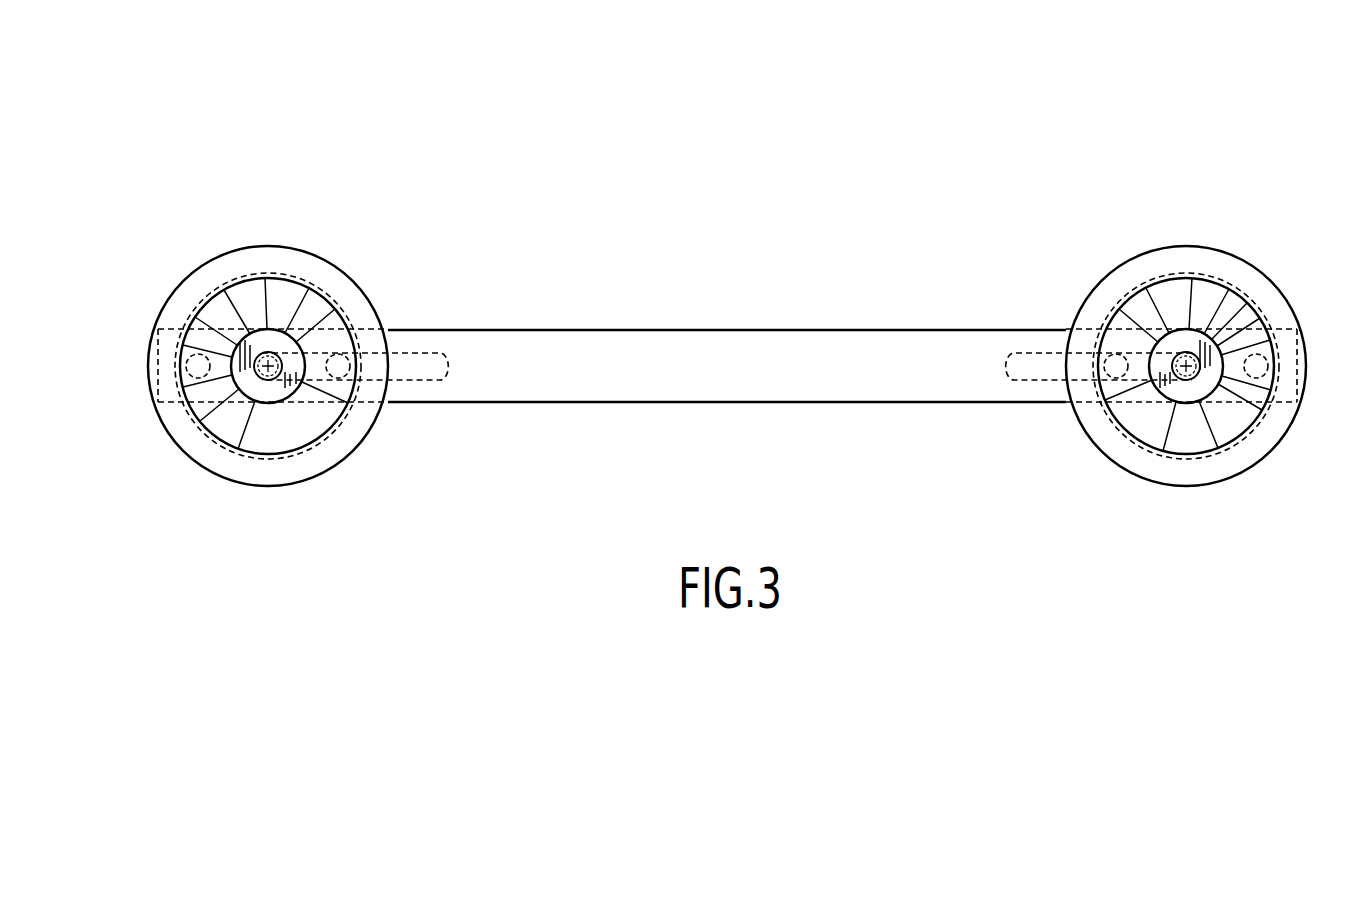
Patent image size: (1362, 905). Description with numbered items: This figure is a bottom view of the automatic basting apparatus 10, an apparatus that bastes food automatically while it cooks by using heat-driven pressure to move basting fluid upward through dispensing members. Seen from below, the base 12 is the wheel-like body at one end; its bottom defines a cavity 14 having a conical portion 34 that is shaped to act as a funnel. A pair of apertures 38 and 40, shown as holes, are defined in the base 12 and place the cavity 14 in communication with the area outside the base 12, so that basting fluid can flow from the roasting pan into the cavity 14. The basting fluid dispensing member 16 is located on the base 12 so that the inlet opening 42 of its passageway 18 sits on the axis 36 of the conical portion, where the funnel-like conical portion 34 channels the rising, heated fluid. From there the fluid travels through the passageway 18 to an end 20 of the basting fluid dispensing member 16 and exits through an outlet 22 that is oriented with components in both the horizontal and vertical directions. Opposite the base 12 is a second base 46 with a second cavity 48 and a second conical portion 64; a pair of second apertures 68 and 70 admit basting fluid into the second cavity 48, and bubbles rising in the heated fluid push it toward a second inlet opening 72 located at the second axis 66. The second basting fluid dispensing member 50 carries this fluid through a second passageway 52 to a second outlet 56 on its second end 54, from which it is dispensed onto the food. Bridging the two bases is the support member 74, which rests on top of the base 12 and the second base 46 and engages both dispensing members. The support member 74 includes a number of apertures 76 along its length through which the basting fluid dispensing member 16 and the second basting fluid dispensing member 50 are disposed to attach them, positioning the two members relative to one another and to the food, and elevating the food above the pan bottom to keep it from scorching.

The automatic basting apparatus 10 is at (615, 88).
The base 12 is at (199, 268).
The cavity 14 is at (237, 410).
The basting fluid dispensing member 16 is at (407, 330).
The passageway 18 is at (272, 362).
The end 20 is at (447, 355).
The outlet 22 is at (449, 375).
The conical portion 34 is at (287, 307).
The axis 36 is at (262, 372).
The aperture 38 is at (270, 460).
The aperture 40 is at (270, 273).
The inlet opening 42 is at (272, 400).
The second base 46 is at (1257, 267).
The second cavity 48 is at (1218, 411).
The second basting fluid dispensing member 50 is at (1045, 353).
The second passageway 52 is at (1182, 362).
The second end 54 is at (1010, 380).
The second outlet 56 is at (1006, 378).
The second conical portion 64 is at (1170, 308).
The second axis 66 is at (1223, 390).
The second aperture 68 is at (1186, 459).
The second aperture 70 is at (1187, 274).
The second inlet opening 72 is at (1182, 370).
The support member 74 is at (734, 338).
The apertures 76 is at (238, 350).